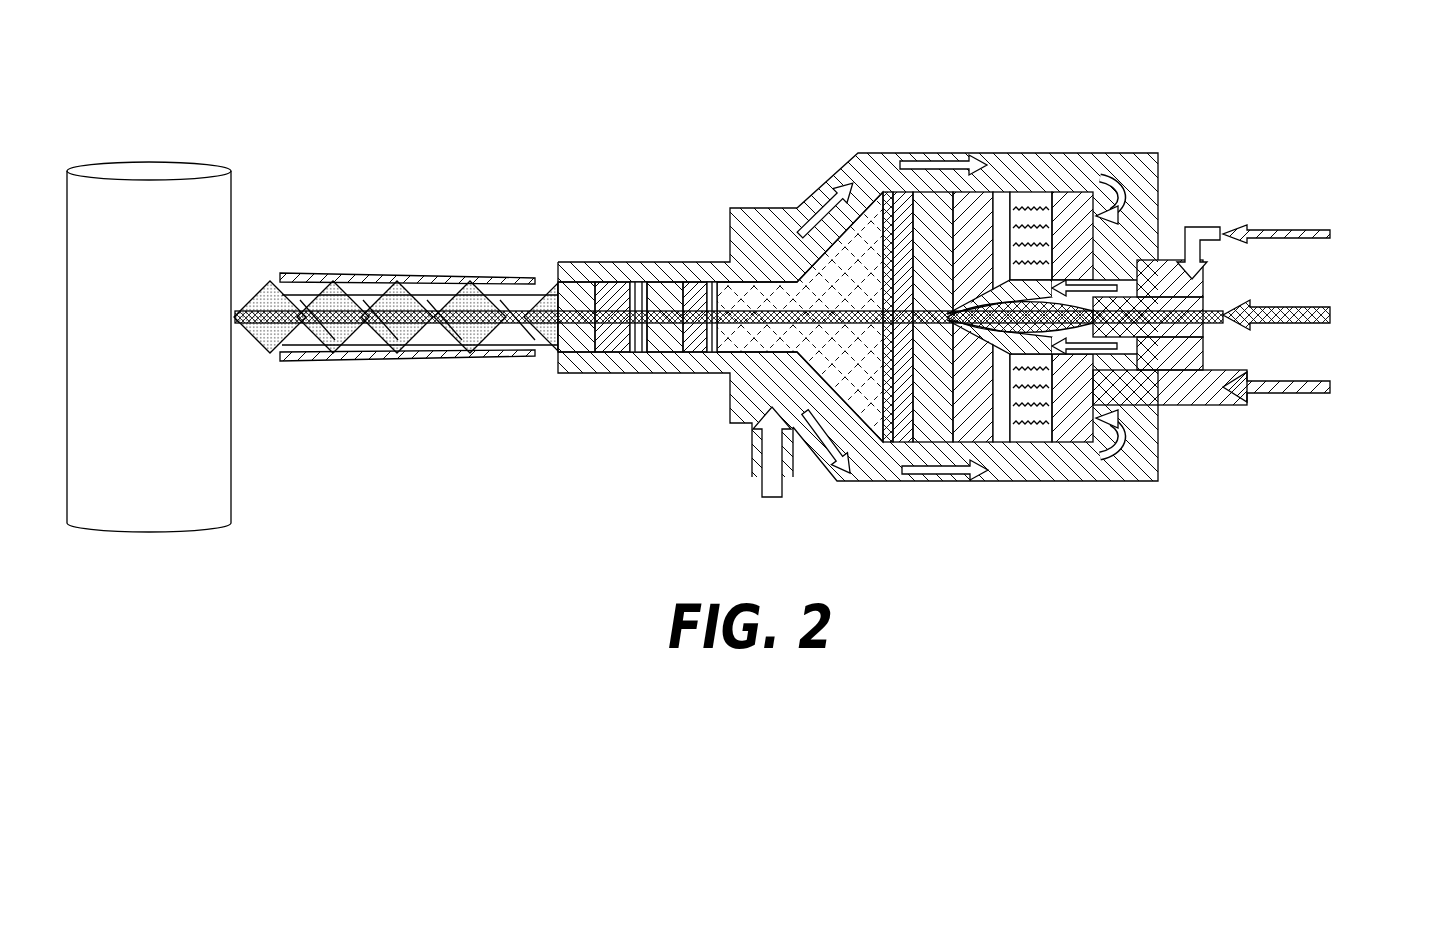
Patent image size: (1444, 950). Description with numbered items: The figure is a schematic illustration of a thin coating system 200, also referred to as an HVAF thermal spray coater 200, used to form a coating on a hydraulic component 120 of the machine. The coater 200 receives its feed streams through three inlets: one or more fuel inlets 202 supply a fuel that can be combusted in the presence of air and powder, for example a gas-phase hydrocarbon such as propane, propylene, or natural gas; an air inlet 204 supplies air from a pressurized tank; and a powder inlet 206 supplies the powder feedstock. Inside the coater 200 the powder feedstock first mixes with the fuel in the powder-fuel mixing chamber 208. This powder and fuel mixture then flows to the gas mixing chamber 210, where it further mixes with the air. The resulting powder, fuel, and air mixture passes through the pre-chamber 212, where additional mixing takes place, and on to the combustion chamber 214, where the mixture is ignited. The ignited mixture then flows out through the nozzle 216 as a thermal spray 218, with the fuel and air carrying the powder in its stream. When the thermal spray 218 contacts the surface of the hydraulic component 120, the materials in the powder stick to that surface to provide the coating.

The thin coating system 200 is at (274, 42).
The hydraulic component 120 is at (150, 170).
The fuel inlet 202 is at (1198, 227).
The air inlet 204 is at (794, 468).
The powder inlet 206 is at (1222, 297).
The powder-fuel mixing chamber 208 is at (1170, 262).
The gas mixing chamber 210 is at (1075, 205).
The pre-chamber 212 is at (1022, 290).
The combustion chamber 214 is at (873, 238).
The nozzle 216 is at (688, 285).
The thermal spray 218 is at (325, 295).